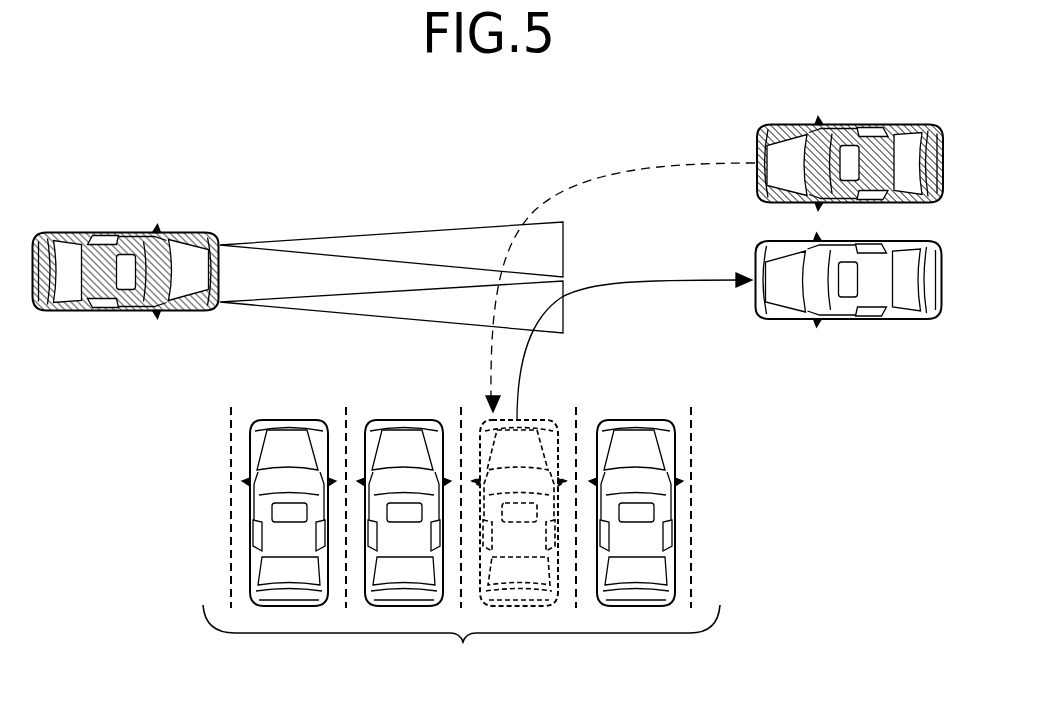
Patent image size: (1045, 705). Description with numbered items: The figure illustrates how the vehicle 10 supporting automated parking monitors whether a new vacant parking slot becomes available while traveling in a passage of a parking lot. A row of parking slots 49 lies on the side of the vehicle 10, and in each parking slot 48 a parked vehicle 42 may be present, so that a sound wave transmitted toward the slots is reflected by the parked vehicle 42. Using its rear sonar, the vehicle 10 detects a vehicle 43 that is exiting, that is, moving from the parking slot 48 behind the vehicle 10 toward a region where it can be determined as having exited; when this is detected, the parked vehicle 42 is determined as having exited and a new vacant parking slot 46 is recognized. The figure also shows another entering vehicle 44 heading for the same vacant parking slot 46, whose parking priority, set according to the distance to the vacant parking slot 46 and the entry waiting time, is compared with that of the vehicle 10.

The vehicle 10 is at (193, 232).
The parked vehicle 42 is at (289, 420).
The vehicle that is exiting 43 is at (783, 242).
The another entering vehicle 44 is at (785, 126).
The new vacant parking slot 46 is at (559, 418).
The parking slot 48 is at (246, 418).
The parking slots 49 is at (461, 643).